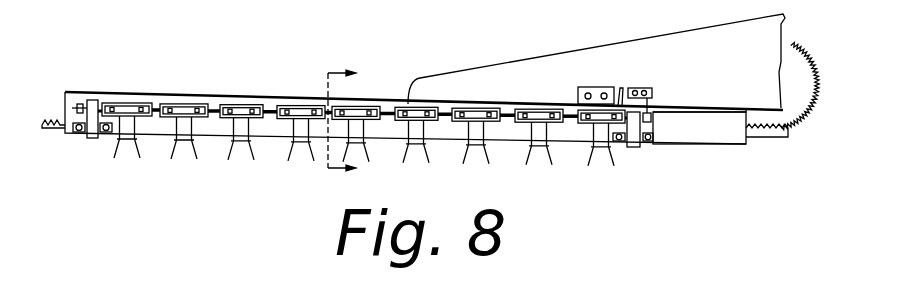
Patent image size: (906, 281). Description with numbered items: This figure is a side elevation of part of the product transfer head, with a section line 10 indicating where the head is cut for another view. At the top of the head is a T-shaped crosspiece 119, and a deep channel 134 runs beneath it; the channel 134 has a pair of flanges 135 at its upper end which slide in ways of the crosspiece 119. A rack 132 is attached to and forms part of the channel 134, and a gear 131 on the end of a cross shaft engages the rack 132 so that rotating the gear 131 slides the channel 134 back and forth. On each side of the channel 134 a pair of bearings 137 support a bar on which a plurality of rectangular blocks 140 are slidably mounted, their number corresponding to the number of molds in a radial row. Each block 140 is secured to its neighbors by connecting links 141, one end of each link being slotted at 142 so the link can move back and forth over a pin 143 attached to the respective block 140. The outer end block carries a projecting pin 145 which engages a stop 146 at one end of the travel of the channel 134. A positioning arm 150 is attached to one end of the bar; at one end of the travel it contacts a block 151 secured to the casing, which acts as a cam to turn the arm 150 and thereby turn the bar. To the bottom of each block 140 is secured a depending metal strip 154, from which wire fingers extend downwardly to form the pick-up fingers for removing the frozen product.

The section line 10- 10 is at (329, 122).
The crosspiece 119 is at (613, 44).
The gear 131 is at (788, 38).
The rack 132 is at (777, 140).
The channel 134 is at (725, 136).
The flanges 135 is at (367, 97).
The bearings 137 is at (90, 137).
The rectangular blocks 140 is at (186, 103).
The connecting links 141 is at (572, 110).
The slot 142 is at (512, 110).
The pin 143 is at (520, 110).
The pin 145 is at (623, 100).
The stop 146 is at (594, 87).
The positioning arm 150 is at (652, 100).
The block 151 is at (652, 88).
The metal strip 154 is at (415, 145).